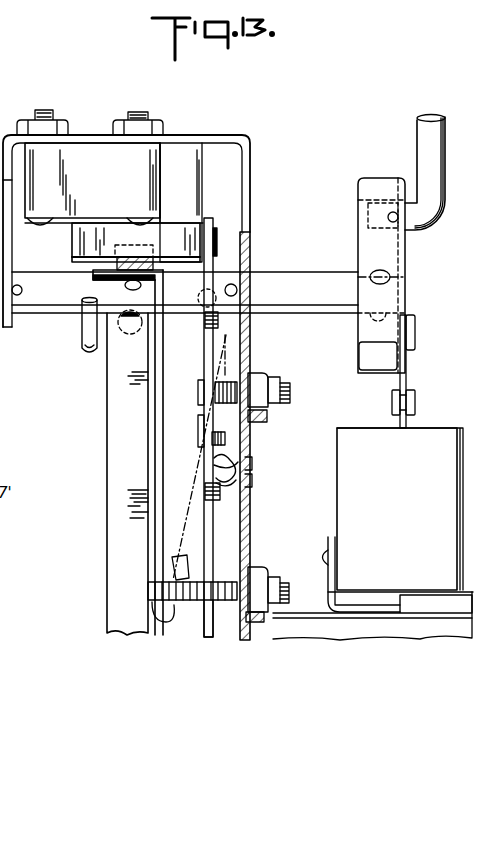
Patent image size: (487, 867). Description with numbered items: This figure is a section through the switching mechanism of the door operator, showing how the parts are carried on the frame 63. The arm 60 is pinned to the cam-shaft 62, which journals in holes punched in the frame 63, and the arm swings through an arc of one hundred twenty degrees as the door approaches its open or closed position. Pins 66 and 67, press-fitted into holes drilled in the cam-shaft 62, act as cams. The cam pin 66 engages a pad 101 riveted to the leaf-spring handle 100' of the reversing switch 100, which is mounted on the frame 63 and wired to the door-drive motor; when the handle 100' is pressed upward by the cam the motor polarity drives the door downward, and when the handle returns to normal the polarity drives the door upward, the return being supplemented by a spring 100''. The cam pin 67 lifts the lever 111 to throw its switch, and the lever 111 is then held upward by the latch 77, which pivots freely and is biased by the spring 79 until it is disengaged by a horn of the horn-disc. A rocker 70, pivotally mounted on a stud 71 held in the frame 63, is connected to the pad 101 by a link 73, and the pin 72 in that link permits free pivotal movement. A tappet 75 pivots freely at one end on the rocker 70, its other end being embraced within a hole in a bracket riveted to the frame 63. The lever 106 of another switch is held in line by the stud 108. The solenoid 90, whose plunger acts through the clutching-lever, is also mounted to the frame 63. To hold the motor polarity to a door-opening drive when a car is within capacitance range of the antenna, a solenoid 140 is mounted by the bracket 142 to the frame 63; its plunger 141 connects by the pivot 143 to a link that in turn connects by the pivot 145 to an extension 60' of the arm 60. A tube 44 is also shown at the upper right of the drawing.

The tube 44 is at (418, 140).
The arm 60 is at (357, 275).
The extension of arm 60' is at (356, 341).
The cam-shaft 62 is at (279, 284).
The frame 63 is at (251, 190).
The pin 66 is at (88, 345).
The pin 67 is at (125, 282).
The rocker 70 is at (213, 460).
The stud 71 is at (288, 393).
The pin 72 is at (216, 237).
The link 73 is at (211, 225).
The tappet 75 is at (210, 638).
The latch 77 is at (158, 383).
The spring 79 is at (176, 562).
The solenoid 90 is at (362, 632).
The reversing switch 100 is at (110, 167).
The handle 100' is at (117, 242).
The spring 100'' is at (193, 324).
The pad 101 is at (180, 222).
The lever 106 is at (112, 438).
The stud 108 is at (132, 330).
The lever 111 is at (145, 262).
The solenoid 140 is at (412, 501).
The plunger 141 is at (398, 403).
The bracket 142 is at (334, 604).
The pivot 143 is at (416, 403).
The pivot 145 is at (416, 340).